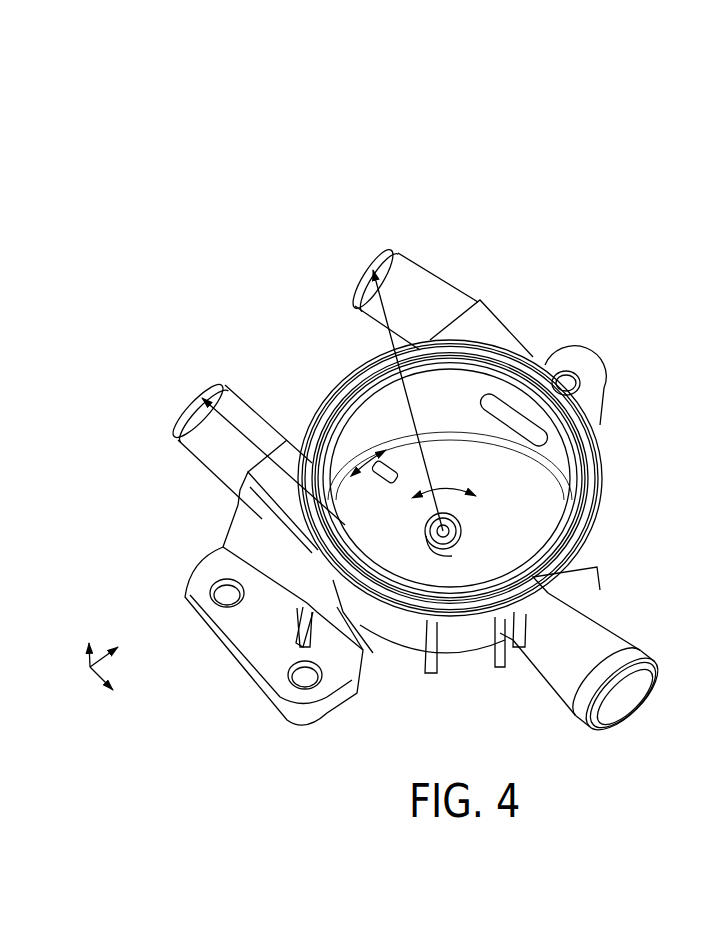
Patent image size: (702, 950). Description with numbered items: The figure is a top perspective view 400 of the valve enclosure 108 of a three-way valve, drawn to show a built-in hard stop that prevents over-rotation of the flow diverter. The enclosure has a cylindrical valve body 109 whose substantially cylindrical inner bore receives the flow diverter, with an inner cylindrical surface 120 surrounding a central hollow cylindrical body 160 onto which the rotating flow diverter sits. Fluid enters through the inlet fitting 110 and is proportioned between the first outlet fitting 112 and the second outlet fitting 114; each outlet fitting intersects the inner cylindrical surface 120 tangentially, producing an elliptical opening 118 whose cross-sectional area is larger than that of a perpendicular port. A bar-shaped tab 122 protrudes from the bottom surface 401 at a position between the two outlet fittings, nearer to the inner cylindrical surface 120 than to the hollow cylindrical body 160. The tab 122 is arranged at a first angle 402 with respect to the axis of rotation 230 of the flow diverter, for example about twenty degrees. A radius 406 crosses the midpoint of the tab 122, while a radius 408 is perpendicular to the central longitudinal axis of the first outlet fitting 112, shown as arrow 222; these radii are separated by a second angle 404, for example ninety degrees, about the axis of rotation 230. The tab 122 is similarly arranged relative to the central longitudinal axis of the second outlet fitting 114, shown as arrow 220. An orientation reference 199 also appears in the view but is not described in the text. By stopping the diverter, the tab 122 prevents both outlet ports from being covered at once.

The top perspective view 400 is at (343, 428).
The valve enclosure 108 is at (487, 296).
The cylindrical valve body 109 is at (487, 572).
The inlet fitting 110 is at (584, 647).
The first outlet fitting 112 is at (412, 265).
The second outlet fitting 114 is at (239, 402).
The elliptical opening 118 is at (559, 432).
The inner cylindrical surface 120 is at (450, 478).
The hard stop tab 122 is at (379, 381).
The hollow cylindrical body 160 is at (413, 623).
The coordinate system 199 is at (72, 626).
The arrow 220 is at (273, 427).
The arrow 222 is at (430, 375).
The axis of rotation 230 is at (559, 479).
The bottom surface 401 is at (455, 547).
The first angle 402 is at (350, 407).
The second angle 404 is at (523, 363).
The radius 406 is at (312, 515).
The radius 408 is at (599, 405).